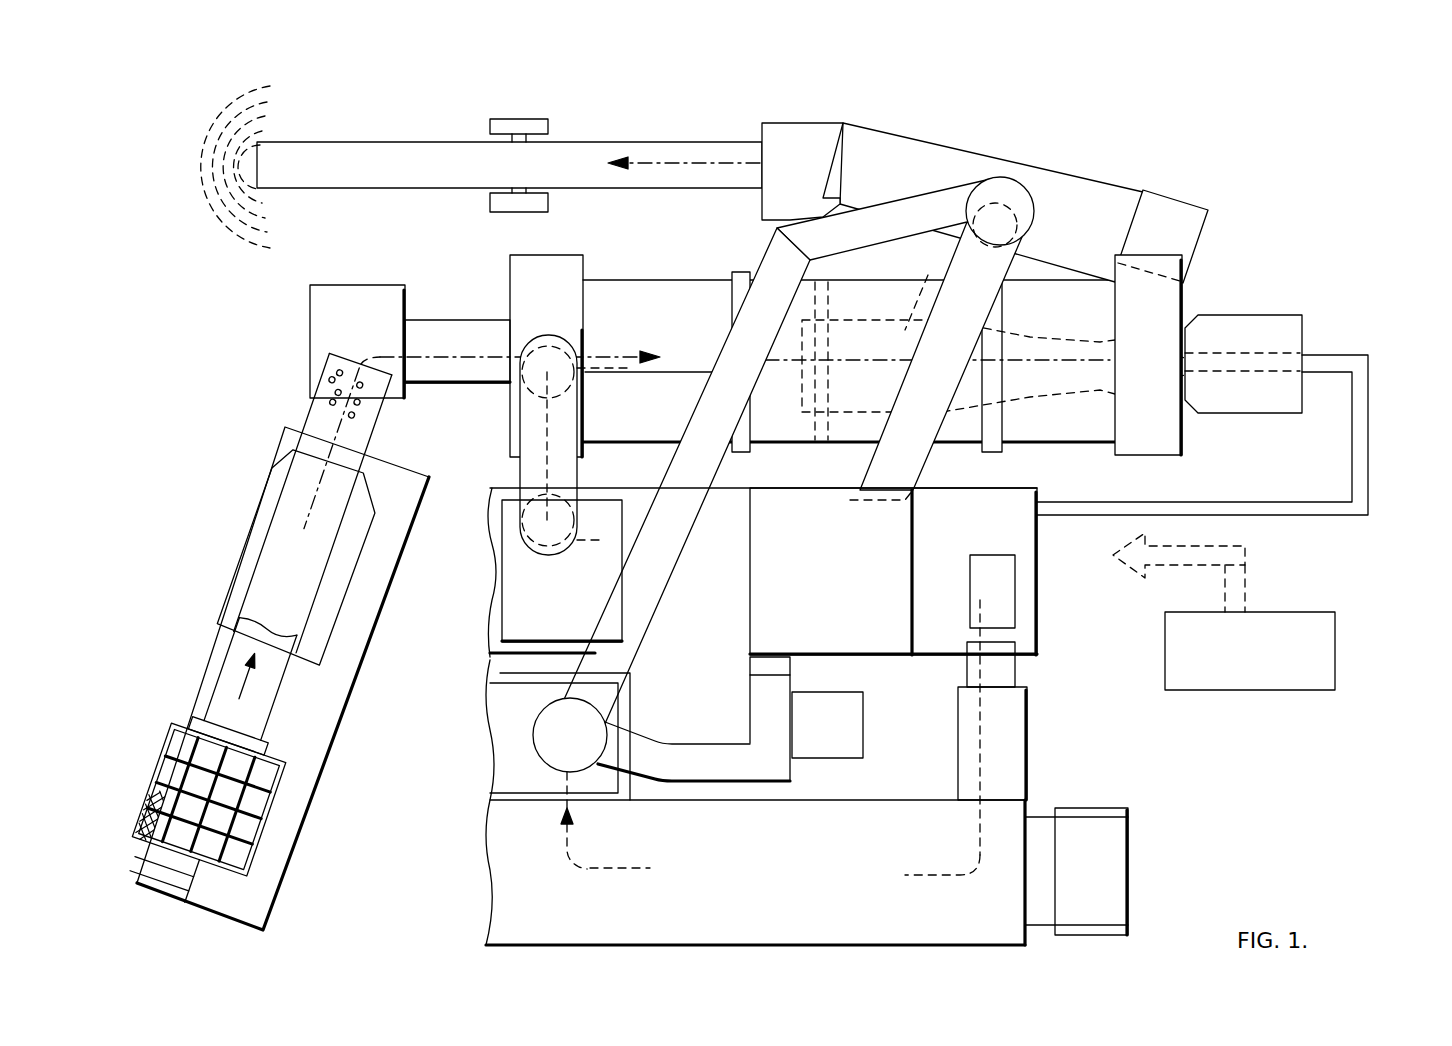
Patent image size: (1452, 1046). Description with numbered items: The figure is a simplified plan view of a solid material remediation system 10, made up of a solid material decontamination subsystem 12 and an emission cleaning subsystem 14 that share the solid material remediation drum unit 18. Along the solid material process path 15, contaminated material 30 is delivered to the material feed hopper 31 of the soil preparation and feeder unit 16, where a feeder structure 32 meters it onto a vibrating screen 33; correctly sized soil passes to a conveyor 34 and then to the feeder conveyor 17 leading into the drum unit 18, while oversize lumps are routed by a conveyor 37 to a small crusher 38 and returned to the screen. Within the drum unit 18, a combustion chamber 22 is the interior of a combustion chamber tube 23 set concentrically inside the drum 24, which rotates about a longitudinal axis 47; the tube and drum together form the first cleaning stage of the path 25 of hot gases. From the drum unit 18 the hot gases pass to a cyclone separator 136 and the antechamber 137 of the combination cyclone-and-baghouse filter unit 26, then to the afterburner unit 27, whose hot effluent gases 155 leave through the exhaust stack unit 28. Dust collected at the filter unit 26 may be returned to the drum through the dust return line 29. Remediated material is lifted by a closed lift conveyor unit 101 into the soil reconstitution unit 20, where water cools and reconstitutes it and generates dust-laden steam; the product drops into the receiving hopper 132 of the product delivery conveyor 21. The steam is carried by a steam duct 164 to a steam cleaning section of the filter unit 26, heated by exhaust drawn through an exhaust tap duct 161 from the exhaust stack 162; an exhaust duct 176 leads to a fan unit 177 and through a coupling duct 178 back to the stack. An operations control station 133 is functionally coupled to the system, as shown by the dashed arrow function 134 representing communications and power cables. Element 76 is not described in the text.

The solid material remediation system 10 is at (1370, 536).
The solid material decontamination subsystem 12 is at (1232, 260).
The emission cleaning subsystem 14 is at (1088, 722).
The solid material process path 15 is at (662, 158).
The soil preparation and feeder unit 16 is at (244, 626).
The feeder conveyor 17 is at (450, 386).
The solid material remediation drum unit 18 is at (652, 280).
The soil reconstitution unit 20 is at (976, 151).
The product delivery conveyor 21 is at (352, 142).
The combustion chamber 22 is at (927, 286).
The combustion chamber tube 23 is at (1048, 398).
The drum 24 is at (854, 288).
The path of hot gases 25 is at (544, 462).
The combination cyclone-and-baghouse filter unit 26 is at (806, 488).
The afterburner unit 27 is at (462, 880).
The exhaust stack unit 28 is at (490, 742).
The dust return line 29 is at (1368, 425).
The material 30 is at (188, 218).
The material feed hopper 31 is at (177, 788).
The feeder structure 32 is at (208, 670).
The vibrating screen 33 is at (273, 545).
The conveyor 34 is at (335, 510).
The conveyor 37 is at (300, 792).
The small crusher 38 is at (135, 863).
The longitudinal axis 47 is at (845, 362).
The coupling 76 is at (1286, 314).
The closed lift conveyor unit 101 is at (1210, 212).
The receiving hopper 132 is at (772, 124).
The operations control station 133 is at (1336, 612).
The dashed arrow function 134 is at (1246, 562).
The cyclone separator 136 is at (498, 584).
The antechamber 137 is at (740, 486).
The hot effluent gases 155 is at (958, 734).
The exhaust tap duct 161 is at (658, 582).
The exhaust stack 162 is at (548, 756).
The steam duct 164 is at (920, 457).
The exhaust duct 176 is at (794, 666).
The fan unit 177 is at (838, 760).
The coupling duct 178 is at (668, 738).